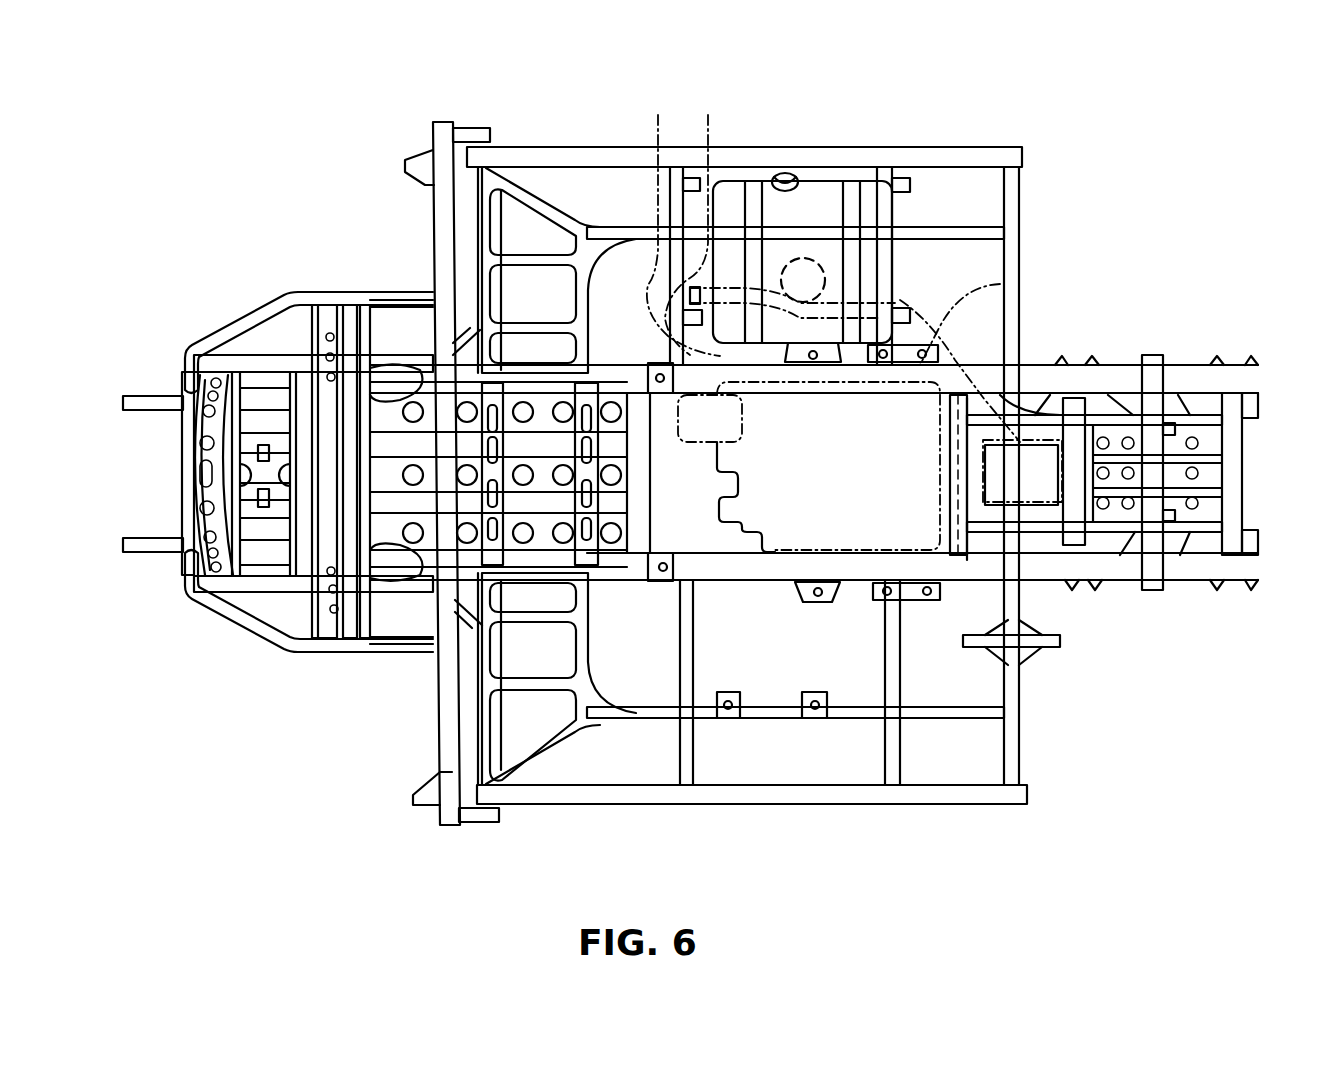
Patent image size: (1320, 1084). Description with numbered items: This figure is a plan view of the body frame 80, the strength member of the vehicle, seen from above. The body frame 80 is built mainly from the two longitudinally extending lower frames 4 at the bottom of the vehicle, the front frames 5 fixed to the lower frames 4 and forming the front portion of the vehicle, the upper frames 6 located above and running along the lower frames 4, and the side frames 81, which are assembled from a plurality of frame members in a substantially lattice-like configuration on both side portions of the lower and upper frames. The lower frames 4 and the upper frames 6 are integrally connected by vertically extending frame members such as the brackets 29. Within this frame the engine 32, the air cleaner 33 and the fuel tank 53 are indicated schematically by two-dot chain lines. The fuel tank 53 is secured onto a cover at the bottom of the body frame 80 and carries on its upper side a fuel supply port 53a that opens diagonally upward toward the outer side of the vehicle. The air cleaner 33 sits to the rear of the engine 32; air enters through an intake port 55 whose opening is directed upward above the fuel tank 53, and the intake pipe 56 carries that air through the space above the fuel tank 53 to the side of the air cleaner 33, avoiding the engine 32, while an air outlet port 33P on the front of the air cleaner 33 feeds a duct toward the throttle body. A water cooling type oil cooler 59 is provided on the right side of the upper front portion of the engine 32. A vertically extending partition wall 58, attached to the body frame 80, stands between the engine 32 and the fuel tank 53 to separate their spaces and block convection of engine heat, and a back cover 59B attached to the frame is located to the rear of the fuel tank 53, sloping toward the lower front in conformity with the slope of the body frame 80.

The body frame 80 is at (690, 460).
The side frames 81 is at (587, 147).
The partition wall 58 is at (678, 223).
The intake port 55 is at (780, 266).
The fuel tank 53 is at (825, 226).
The fuel supply port 53a is at (785, 175).
The back cover 59B is at (952, 192).
The oil cooler 59 is at (690, 432).
The intake pipe 56 is at (1003, 283).
The engine 32 is at (773, 540).
The air cleaner 33 is at (1037, 430).
The air outlet port 33P is at (985, 470).
The brackets 29 is at (1060, 365).
The upper frames 6 is at (1188, 367).
The front frames 5 is at (250, 317).
The lower frames 4 is at (177, 398).